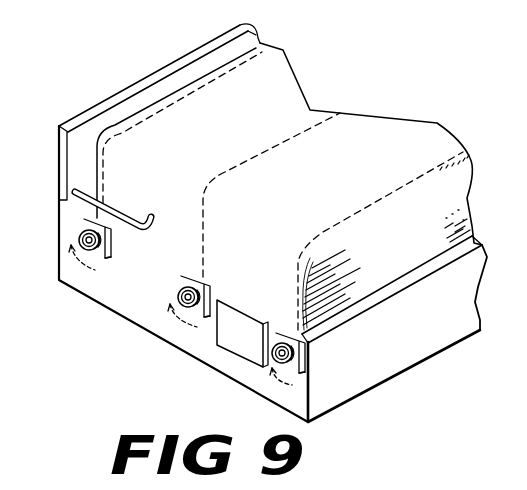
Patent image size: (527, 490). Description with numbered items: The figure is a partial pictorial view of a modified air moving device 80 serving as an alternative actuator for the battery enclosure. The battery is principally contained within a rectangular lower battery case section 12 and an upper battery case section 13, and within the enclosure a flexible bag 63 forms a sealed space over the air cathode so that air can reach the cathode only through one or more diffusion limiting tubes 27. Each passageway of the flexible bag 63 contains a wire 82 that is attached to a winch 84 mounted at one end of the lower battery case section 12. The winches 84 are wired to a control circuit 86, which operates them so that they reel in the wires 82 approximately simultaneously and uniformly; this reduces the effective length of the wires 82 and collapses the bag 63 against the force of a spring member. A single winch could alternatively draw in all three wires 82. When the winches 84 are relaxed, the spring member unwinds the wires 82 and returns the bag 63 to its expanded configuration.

The lower battery case section 12 is at (407, 350).
The upper battery case section 13 is at (88, 113).
The diffusion limiting tube 27 is at (115, 203).
The flexible bag 63 is at (376, 124).
The air moving device 80 is at (101, 326).
The wire 82 is at (187, 89).
The winch 84 is at (78, 233).
The control circuit 86 is at (235, 348).